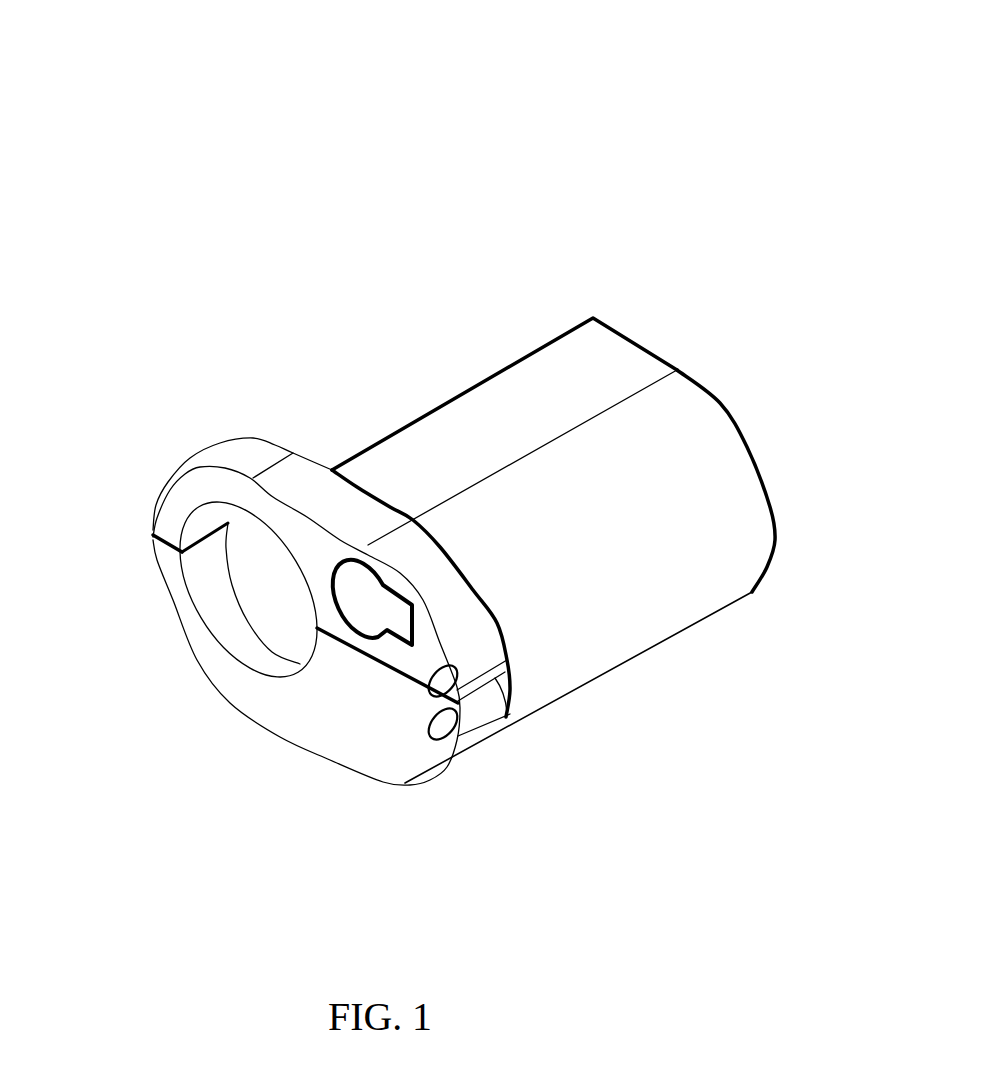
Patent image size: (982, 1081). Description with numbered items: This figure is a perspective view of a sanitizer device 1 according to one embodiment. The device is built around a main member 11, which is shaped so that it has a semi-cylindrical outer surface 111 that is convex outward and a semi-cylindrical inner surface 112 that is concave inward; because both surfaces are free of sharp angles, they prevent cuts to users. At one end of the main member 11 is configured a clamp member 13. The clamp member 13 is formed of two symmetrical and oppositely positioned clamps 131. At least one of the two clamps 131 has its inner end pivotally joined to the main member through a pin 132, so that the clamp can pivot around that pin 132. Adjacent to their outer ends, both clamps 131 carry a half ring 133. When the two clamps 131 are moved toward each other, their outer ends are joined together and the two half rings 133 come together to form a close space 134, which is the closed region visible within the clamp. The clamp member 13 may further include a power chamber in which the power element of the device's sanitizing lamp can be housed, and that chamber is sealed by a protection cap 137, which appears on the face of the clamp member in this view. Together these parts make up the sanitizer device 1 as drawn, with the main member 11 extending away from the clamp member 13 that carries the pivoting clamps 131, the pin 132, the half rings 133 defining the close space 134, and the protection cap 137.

The sanitizer device 1 is at (441, 223).
The main member 11 is at (637, 340).
The semi-cylindrical outer surface 111 is at (699, 489).
The semi-cylindrical inner surface 112 is at (406, 396).
The clamp member 13 is at (185, 355).
The clamps 131 is at (173, 597).
The pin 132 is at (447, 683).
The half ring 133 is at (262, 645).
The close space 134 is at (270, 592).
The protection cap 137 is at (370, 617).